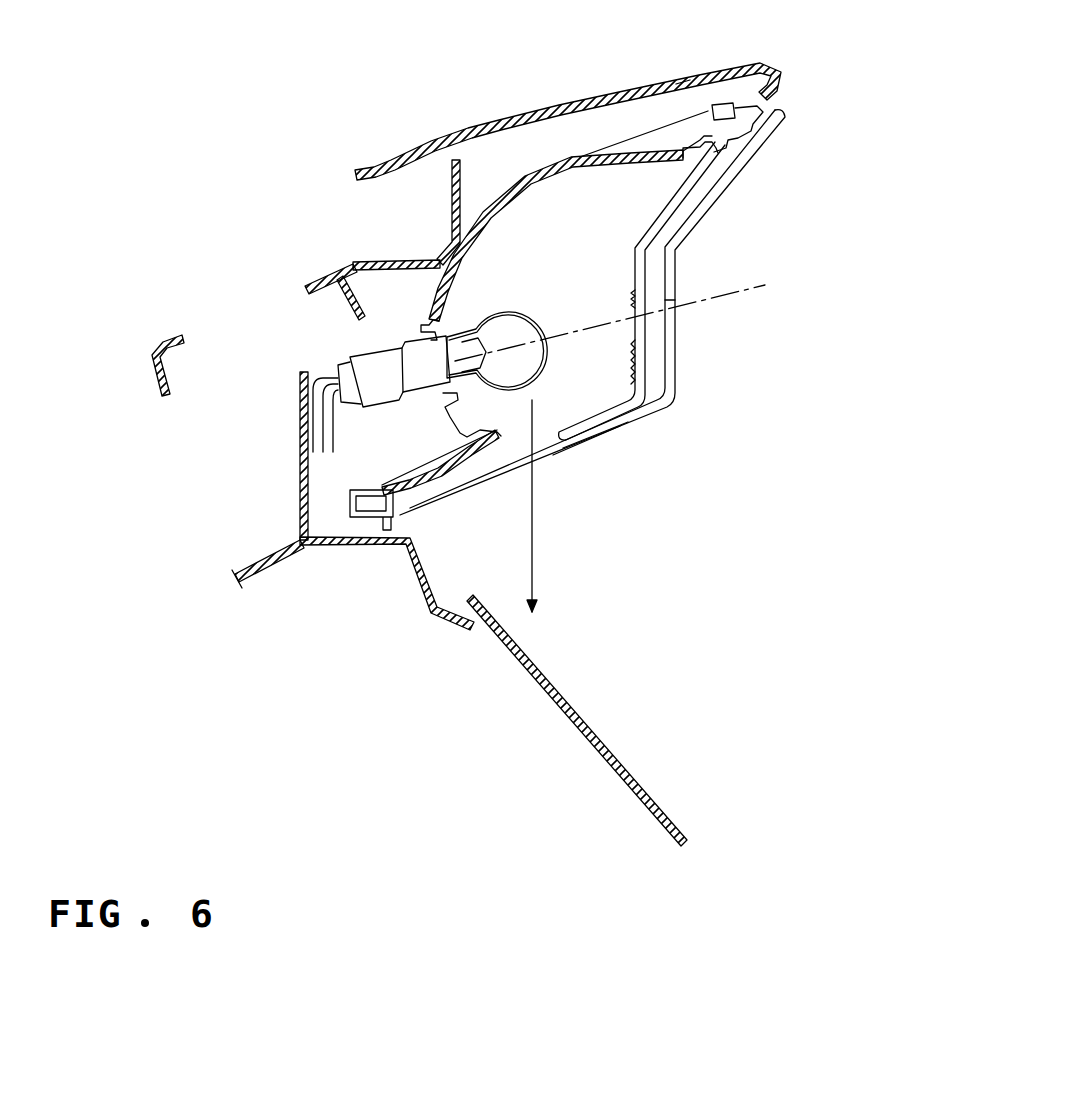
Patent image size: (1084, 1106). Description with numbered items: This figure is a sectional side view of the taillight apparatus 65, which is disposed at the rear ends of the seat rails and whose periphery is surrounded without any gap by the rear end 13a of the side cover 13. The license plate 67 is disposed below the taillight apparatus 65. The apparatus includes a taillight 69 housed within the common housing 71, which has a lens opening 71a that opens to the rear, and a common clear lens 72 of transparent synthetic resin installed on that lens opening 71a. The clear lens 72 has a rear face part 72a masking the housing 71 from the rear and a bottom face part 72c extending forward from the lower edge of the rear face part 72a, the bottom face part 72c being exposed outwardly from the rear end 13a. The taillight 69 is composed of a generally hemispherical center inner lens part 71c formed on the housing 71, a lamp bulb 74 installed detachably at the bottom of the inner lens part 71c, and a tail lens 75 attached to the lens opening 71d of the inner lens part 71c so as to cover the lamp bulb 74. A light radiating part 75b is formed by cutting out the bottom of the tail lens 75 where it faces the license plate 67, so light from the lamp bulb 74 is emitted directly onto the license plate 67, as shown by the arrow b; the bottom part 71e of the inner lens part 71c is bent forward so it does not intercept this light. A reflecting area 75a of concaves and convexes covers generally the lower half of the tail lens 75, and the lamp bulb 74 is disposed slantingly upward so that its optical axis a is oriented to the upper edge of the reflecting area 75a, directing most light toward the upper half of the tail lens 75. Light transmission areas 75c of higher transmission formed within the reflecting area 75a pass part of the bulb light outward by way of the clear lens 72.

The side cover 13 is at (393, 150).
The rear end of the side cover 13a is at (685, 78).
The taillight apparatus 65 is at (835, 142).
The license plate 67 is at (657, 807).
The taillight 69 is at (585, 136).
The common housing 71 is at (533, 174).
The lens opening 71a is at (752, 110).
The center inner lens part 71c is at (497, 204).
The lens opening of the inner lens 71d is at (700, 150).
The bottom part of the center inner lens 71e is at (480, 440).
The clear lens 72 is at (710, 207).
The rear face part 72a is at (673, 347).
The bottom face part 72c is at (547, 460).
The lamp bulb 74 is at (510, 310).
The tail lens 75 is at (652, 248).
The reflecting area 75a is at (631, 307).
The light radiating part 75b is at (547, 457).
The light transmission areas 75c is at (628, 337).
The optical axis a is at (740, 290).
The arrow indicating light emission b is at (535, 565).